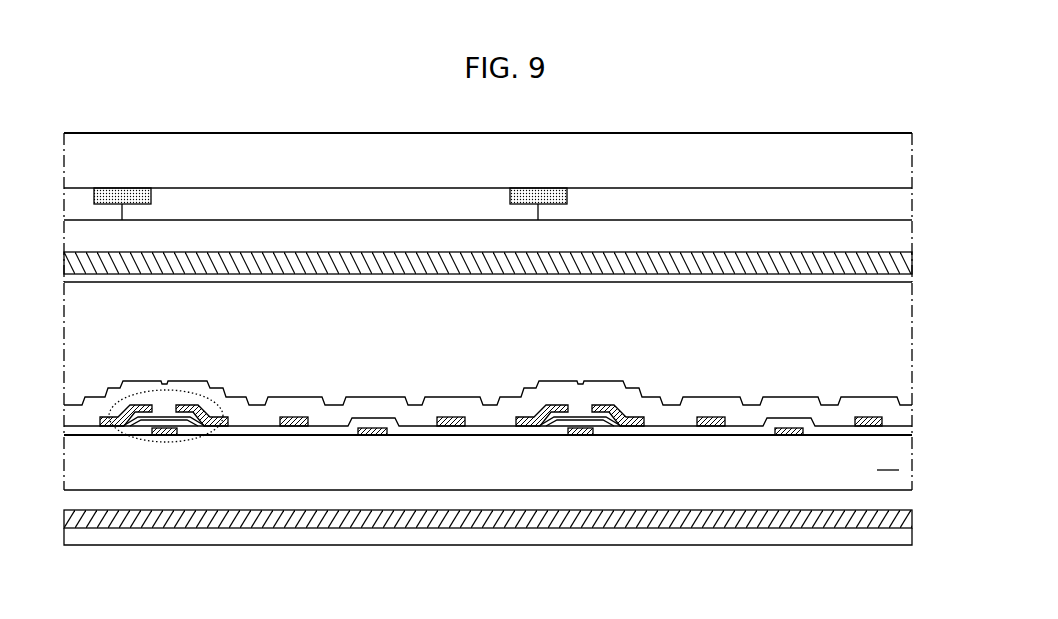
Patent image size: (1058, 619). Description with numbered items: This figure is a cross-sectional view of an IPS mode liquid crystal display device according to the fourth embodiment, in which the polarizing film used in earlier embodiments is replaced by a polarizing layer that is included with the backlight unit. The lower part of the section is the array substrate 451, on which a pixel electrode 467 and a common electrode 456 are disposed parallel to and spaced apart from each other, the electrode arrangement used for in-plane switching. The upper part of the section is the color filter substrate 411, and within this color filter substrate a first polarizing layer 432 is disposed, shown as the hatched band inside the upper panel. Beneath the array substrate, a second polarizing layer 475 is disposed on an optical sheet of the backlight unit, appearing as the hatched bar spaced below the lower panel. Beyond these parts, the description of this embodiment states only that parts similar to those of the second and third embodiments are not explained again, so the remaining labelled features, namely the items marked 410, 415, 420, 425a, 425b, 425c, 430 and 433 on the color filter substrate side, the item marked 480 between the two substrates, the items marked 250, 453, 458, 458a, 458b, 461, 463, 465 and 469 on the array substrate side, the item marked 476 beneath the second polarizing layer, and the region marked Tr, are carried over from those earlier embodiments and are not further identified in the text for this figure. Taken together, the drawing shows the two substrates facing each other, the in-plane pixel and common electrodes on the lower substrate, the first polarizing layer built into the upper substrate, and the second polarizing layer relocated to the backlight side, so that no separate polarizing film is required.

The upper substrate 410 is at (704, 166).
The color filter substrate 411 is at (912, 133).
The light blocking member 415 is at (127, 188).
The common electrode 420 is at (459, 188).
The red color filter 425a is at (402, 200).
The green color filter 425b is at (793, 198).
The blue color filter 425c is at (78, 190).
The overcoat layer 430 is at (254, 230).
The first polarizing layer 432 is at (307, 262).
The alignment layer 433 is at (200, 278).
The liquid crystal layer 480 is at (905, 321).
The array substrate 451 is at (912, 407).
The lower substrate 250 is at (488, 452).
The gate electrode 453 is at (163, 436).
The common electrode 456 is at (373, 427).
The semiconductor layer 458 is at (164, 381).
The active layer 458a is at (136, 411).
The ohmic contact layer 458b is at (164, 418).
The gate insulating layer 461 is at (328, 431).
The source electrode 463 is at (124, 406).
The drain electrode 465 is at (206, 418).
The pixel electrode 467 is at (295, 417).
The passivation layer 469 is at (411, 415).
The second polarizing layer 475 is at (466, 520).
The backlight unit 476 is at (520, 536).
The thin film transistor Tr is at (195, 441).